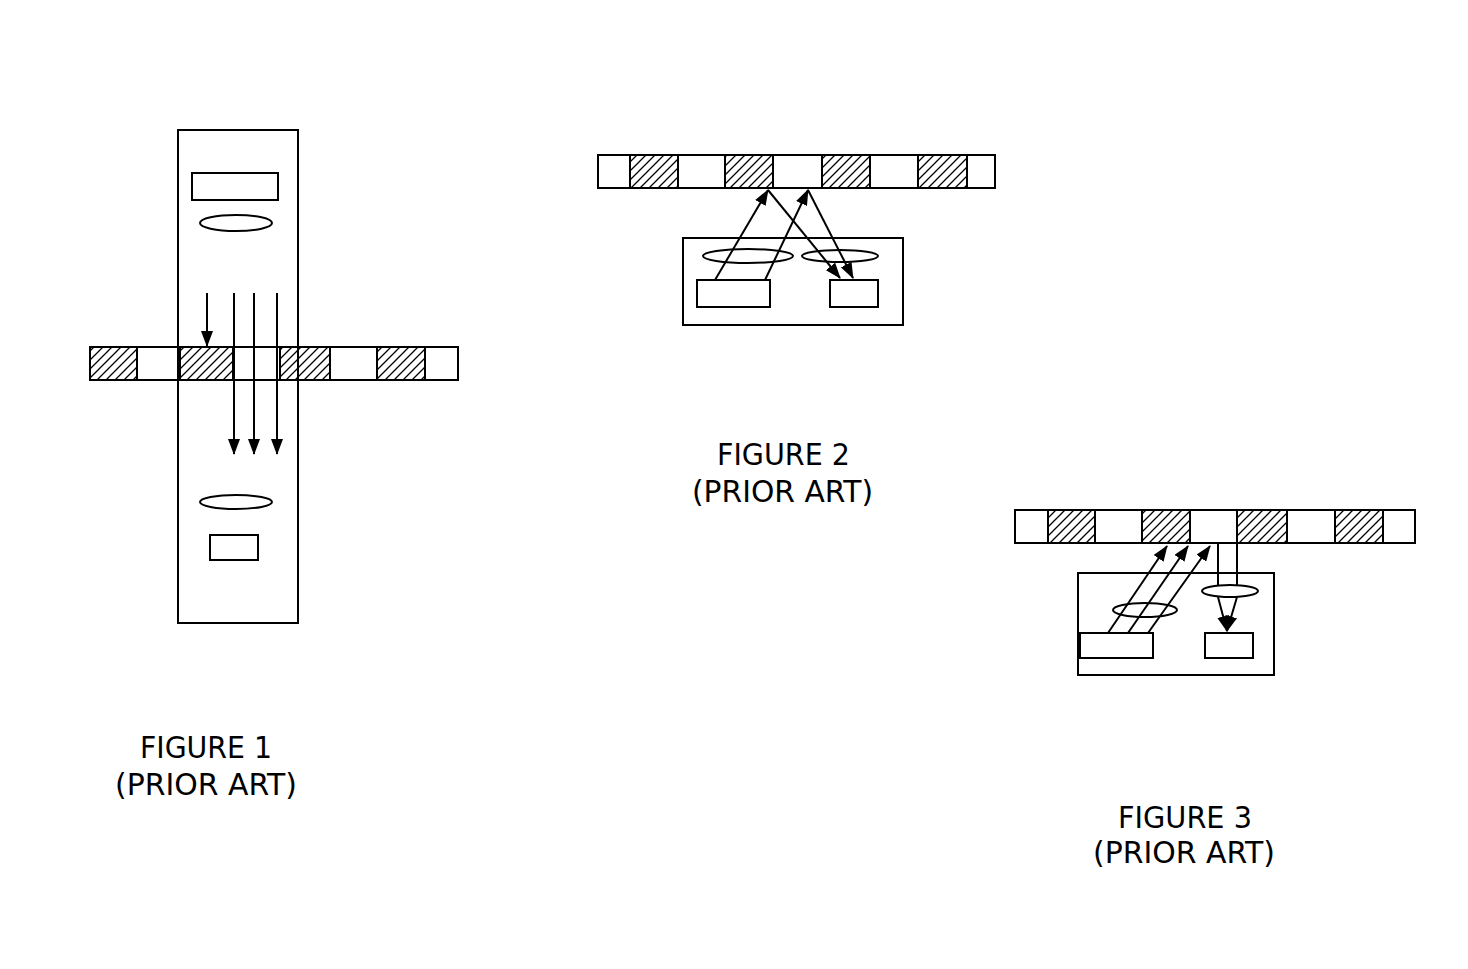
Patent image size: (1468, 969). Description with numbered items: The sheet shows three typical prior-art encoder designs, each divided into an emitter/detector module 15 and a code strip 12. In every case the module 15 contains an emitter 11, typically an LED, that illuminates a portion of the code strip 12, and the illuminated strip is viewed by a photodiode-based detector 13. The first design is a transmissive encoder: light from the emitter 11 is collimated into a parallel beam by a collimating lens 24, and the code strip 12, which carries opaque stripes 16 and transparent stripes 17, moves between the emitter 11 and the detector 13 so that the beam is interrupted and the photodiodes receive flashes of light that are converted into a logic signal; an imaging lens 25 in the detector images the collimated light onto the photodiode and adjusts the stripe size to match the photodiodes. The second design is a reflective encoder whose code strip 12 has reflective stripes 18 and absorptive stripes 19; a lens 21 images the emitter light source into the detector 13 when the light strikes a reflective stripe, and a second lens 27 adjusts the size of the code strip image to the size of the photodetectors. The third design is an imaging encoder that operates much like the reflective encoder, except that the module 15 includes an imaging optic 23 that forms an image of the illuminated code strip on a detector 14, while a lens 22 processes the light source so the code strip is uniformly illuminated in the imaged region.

In FIG. 1, the emitter 11 is at (193, 198).
In FIG. 2, the emitter 11 is at (744, 303).
In FIG. 3, the emitter 11 is at (1127, 657).
In FIG. 1, the code strip 12 is at (449, 379).
In FIG. 2, the code strip 12 is at (977, 190).
In FIG. 3, the code strip 12 is at (1395, 545).
In FIG. 1, the detector 13 is at (232, 557).
In FIG. 2, the detector 13 is at (838, 303).
In FIG. 3, the detector 14 is at (1222, 657).
In FIG. 1, the emitter/detector module 15 is at (296, 277).
In FIG. 2, the emitter/detector module 15 is at (905, 316).
In FIG. 3, the emitter/detector module 15 is at (1275, 650).
In FIG. 1, the opaque stripes 16 is at (387, 379).
In FIG. 1, the transparent stripes 17 is at (156, 379).
In FIG. 2, the reflective stripes 18 is at (706, 189).
In FIG. 3, the reflective stripes 18 is at (1119, 509).
In FIG. 2, the absorptive stripes 19 is at (657, 189).
In FIG. 3, the absorptive stripes 19 is at (1065, 509).
In FIG. 2, the lens 21 is at (703, 255).
In FIG. 3, the lens 22 is at (1113, 610).
In FIG. 3, the imaging optic 23 is at (1258, 590).
In FIG. 1, the collimating lens 24 is at (272, 222).
In FIG. 1, the imaging lens 25 is at (272, 502).
In FIG. 2, the second lens 27 is at (878, 256).